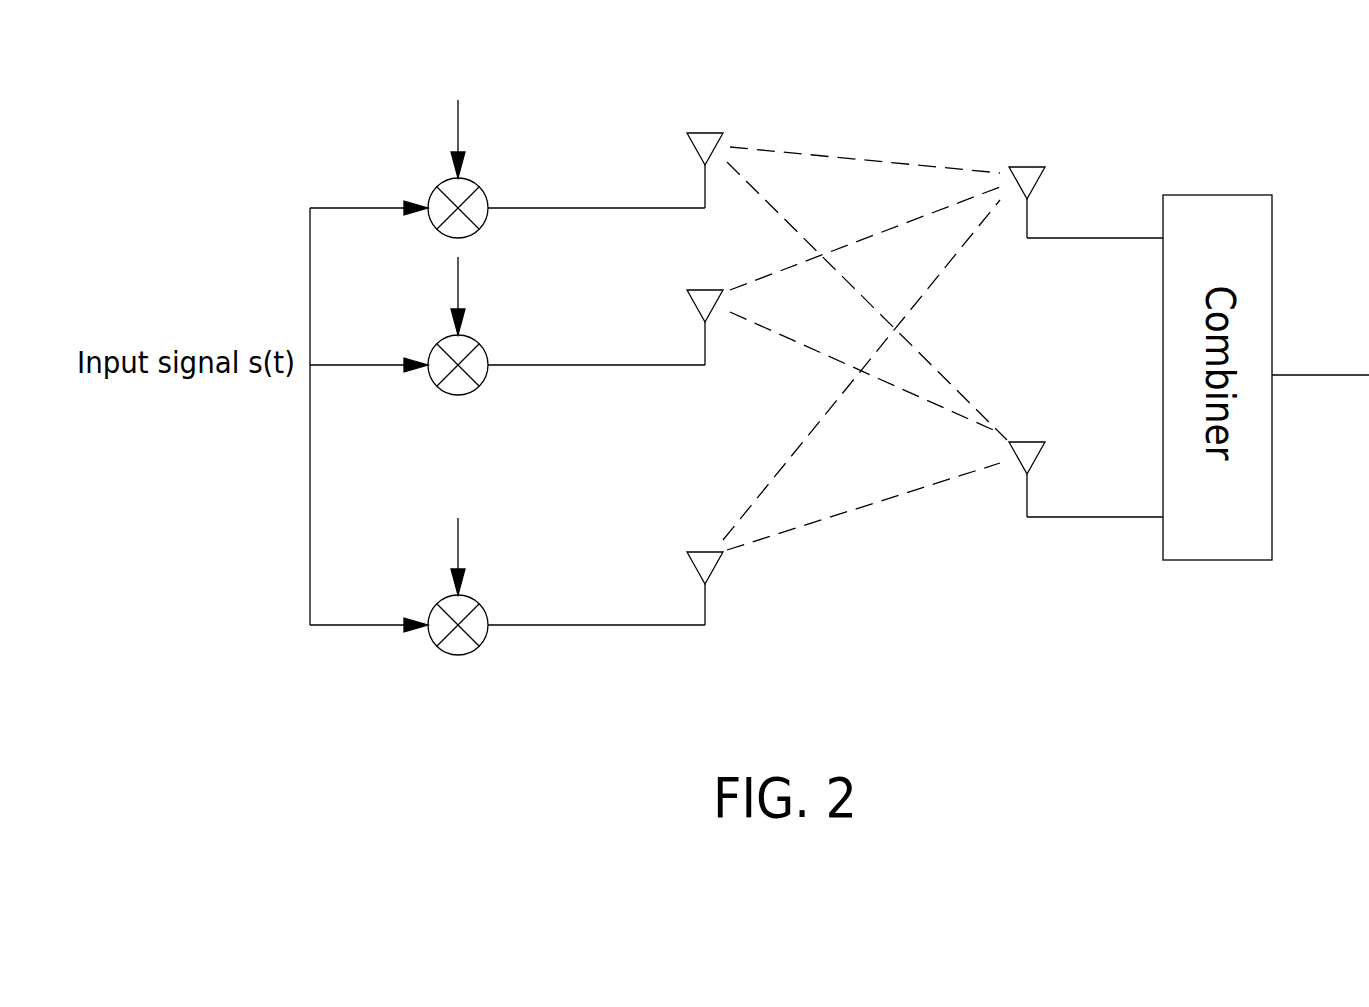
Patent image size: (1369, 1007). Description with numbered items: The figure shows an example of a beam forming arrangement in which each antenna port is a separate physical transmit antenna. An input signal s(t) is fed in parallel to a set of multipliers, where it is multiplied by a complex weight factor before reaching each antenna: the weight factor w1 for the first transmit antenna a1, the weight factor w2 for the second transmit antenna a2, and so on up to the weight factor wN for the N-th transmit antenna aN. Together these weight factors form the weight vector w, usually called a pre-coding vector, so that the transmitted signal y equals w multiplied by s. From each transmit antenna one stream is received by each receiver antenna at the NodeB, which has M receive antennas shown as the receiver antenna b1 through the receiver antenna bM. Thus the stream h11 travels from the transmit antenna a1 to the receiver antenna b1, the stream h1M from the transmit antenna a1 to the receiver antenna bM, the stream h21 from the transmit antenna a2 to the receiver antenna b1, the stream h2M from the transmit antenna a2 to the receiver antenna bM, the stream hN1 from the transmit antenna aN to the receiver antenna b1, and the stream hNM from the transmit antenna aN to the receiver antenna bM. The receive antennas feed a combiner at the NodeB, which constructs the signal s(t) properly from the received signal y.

The complex weight factor w1 is at (507, 169).
The complex weight factor w2 is at (507, 326).
The complex weight factor wN is at (507, 586).
The transmit antenna a1 is at (706, 149).
The transmit antenna a2 is at (706, 306).
The transmit antenna aN is at (700, 567).
The receiver antenna b1 is at (1086, 179).
The receiver antenna bM is at (1086, 458).
The stream h11 is at (842, 153).
The stream h1M is at (783, 213).
The stream h21 is at (770, 277).
The stream h2M is at (770, 333).
The stream hN1 is at (805, 440).
The stream hNM is at (837, 517).